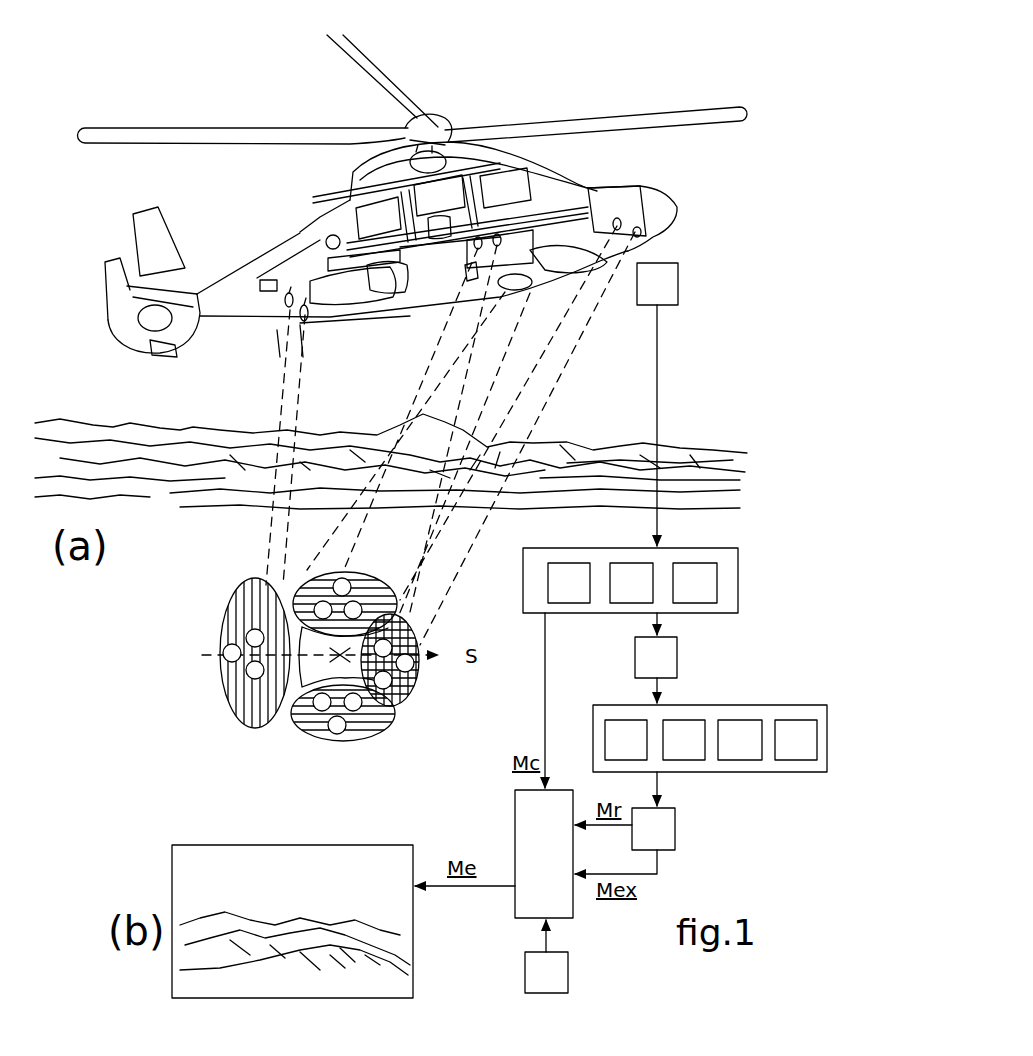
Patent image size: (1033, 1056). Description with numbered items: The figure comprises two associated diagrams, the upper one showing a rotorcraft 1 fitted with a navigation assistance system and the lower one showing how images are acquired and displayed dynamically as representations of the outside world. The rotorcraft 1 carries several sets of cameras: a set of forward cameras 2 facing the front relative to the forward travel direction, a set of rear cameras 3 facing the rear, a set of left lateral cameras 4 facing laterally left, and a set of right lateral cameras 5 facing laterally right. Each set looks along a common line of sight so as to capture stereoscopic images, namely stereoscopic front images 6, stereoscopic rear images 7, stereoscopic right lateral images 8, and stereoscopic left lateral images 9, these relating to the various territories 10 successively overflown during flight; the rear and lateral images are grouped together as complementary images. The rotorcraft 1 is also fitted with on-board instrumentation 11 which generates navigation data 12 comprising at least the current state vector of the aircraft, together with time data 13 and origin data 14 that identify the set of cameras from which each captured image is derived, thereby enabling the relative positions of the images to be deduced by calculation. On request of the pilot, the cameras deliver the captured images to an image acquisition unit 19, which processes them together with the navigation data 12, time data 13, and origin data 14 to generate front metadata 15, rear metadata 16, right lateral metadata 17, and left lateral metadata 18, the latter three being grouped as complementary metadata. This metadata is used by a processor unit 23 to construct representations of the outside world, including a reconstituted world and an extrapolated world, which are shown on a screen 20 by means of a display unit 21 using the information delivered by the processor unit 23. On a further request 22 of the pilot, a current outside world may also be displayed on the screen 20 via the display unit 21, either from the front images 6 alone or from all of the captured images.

The rotorcraft 1 is at (492, 110).
The set of forward cameras 2 is at (632, 222).
The set of rear cameras 3 is at (315, 333).
The set of left lateral cameras 4 is at (539, 300).
The set of right lateral cameras 5 is at (458, 252).
The stereoscopic front images 6 is at (420, 682).
The stereoscopic rear images 7 is at (277, 732).
The stereoscopic right lateral images 8 is at (368, 573).
The stereoscopic left lateral images 9 is at (363, 737).
The territories 10 is at (391, 448).
The on-board instrumentation 11 is at (657, 284).
The navigation data 12 is at (247, 625).
The time data 13 is at (222, 645).
The origin data 14 is at (243, 672).
The front metadata 15 is at (414, 695).
The rear metadata 16 is at (242, 578).
The right lateral metadata 17 is at (338, 570).
The left lateral metadata 18 is at (340, 750).
The image acquisition unit 19 is at (656, 657).
The screen 20 is at (188, 845).
The display unit 21 is at (544, 854).
The request of the pilot 22 is at (546, 956).
The processor unit 23 is at (653, 829).